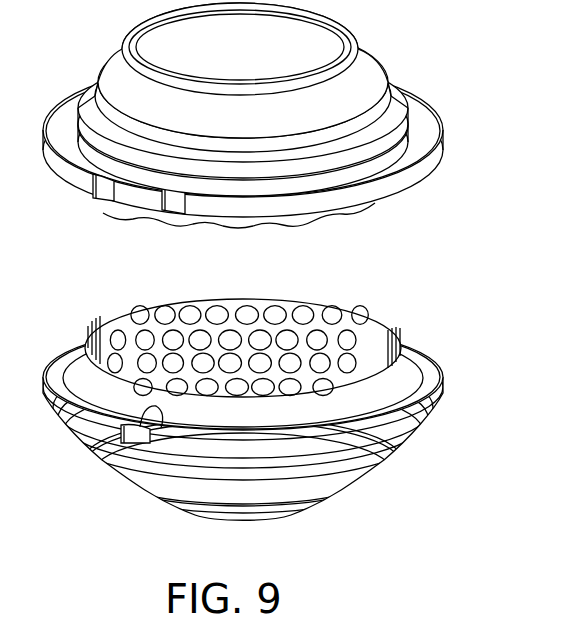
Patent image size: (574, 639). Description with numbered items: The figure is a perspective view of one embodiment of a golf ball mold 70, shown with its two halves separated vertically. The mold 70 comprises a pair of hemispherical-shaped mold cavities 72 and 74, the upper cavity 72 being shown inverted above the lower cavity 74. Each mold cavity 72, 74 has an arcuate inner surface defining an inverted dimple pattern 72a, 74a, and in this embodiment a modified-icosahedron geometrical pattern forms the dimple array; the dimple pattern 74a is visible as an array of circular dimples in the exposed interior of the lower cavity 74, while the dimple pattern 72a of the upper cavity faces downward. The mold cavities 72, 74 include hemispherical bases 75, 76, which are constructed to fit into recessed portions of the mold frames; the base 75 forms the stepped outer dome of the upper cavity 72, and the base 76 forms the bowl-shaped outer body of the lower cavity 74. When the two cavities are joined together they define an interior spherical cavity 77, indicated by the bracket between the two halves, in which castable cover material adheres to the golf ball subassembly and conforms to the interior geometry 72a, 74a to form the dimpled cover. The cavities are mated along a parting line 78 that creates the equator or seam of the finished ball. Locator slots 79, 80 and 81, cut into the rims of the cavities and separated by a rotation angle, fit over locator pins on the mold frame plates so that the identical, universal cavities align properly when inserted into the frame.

The golf ball mold 70 is at (499, 74).
The mold cavity 72 is at (459, 151).
The interior dimple pattern 72a is at (323, 218).
The mold cavity 74 is at (453, 362).
The interior dimple pattern 74a is at (289, 340).
The hemispherical base 75 is at (365, 75).
The hemispherical base 76 is at (340, 466).
The interior spherical cavity 77 is at (145, 228).
The parting line 78 is at (92, 358).
The locator slot 79 is at (98, 199).
The locator slot 80 is at (170, 212).
The locator slot 81 is at (140, 434).